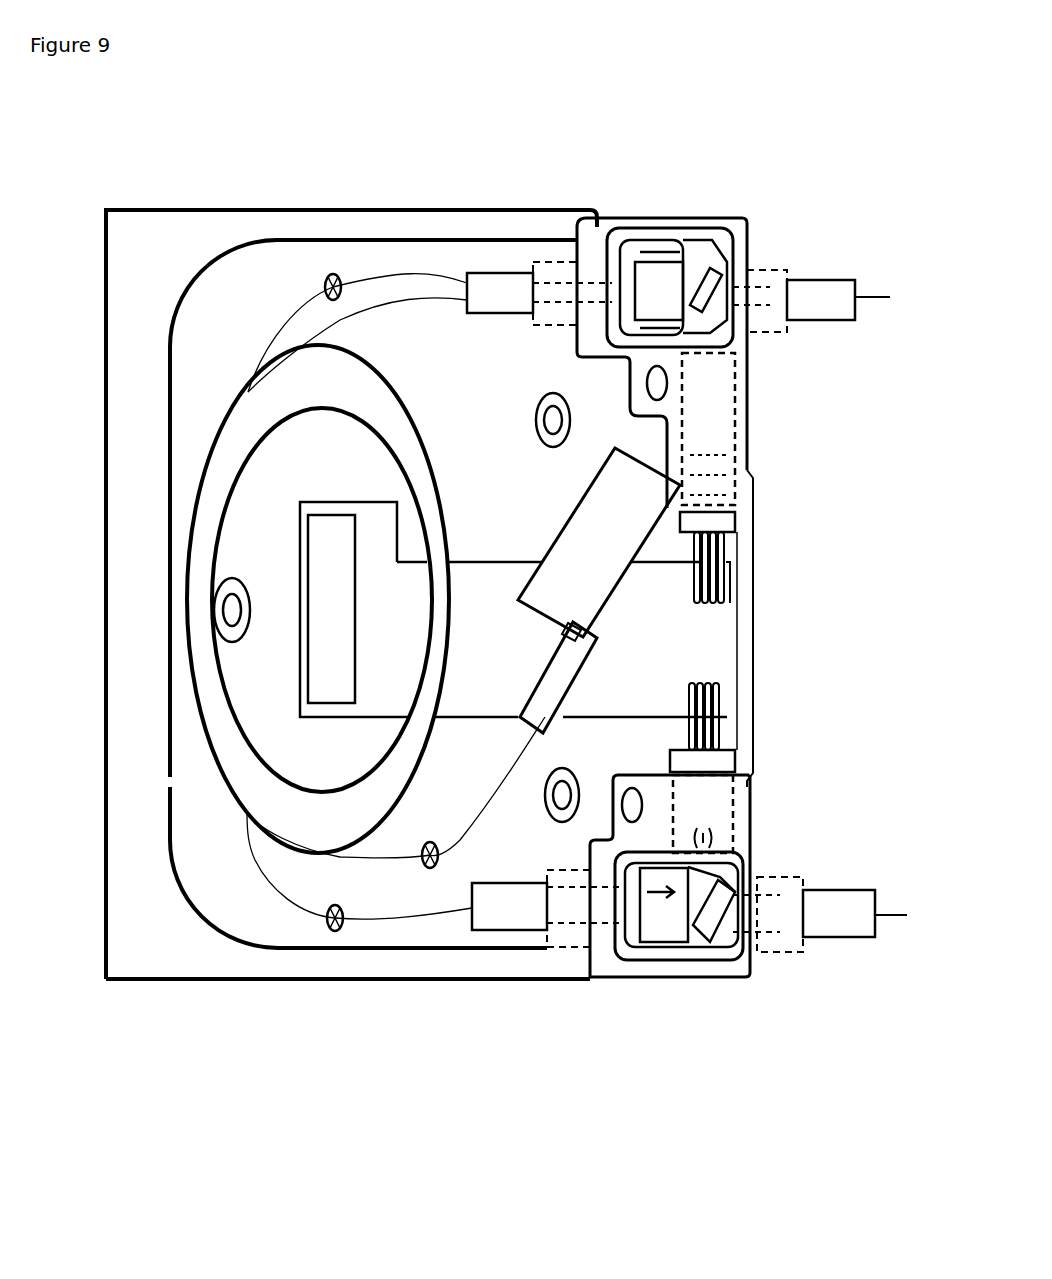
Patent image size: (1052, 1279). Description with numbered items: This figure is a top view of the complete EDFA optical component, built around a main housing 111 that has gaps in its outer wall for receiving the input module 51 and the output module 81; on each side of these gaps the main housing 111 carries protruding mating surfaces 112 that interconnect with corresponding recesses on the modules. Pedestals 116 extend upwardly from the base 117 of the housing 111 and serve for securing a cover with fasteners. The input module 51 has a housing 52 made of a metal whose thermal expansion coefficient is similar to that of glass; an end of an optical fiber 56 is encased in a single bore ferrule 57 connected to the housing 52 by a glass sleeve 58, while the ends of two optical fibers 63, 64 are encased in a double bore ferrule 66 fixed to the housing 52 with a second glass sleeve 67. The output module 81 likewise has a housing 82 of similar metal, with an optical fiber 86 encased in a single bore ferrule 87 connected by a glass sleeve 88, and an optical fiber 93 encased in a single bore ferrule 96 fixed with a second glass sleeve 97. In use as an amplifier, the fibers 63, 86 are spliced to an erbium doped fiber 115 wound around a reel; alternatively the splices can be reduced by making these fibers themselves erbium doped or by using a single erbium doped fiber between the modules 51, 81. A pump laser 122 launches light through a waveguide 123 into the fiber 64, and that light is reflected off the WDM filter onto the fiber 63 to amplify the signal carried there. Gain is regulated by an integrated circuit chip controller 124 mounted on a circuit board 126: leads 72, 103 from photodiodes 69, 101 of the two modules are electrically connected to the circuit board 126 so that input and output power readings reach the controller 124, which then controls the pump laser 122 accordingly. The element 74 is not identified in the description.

The input module 51 is at (710, 152).
The housing 52 is at (737, 217).
The optical fiber 56 is at (878, 297).
The single bore ferrule 57 is at (822, 285).
The glass sleeve 58 is at (768, 268).
The optical fiber 63 is at (395, 272).
The optical fiber 64 is at (412, 302).
The double bore ferrule 66 is at (500, 285).
The second glass sleeve 67 is at (550, 250).
The photodiode 69 is at (728, 515).
The leads 72 is at (723, 597).
The valve element 74 is at (622, 262).
The output module 81 is at (732, 1005).
The housing 82 is at (668, 978).
The optical fiber 86 is at (405, 918).
The single bore ferrule 87 is at (502, 918).
The glass sleeve 88 is at (565, 932).
The optical fiber 93 is at (907, 915).
The single bore ferrule 96 is at (825, 930).
The second glass sleeve 97 is at (782, 948).
The photodiode 101 is at (720, 762).
The leads 103 is at (723, 713).
The main housing 111 is at (133, 225).
The protruding mating surfaces 112 is at (808, 822).
The erbium doped fiber 115 is at (300, 298).
The pedestals 116 is at (533, 423).
The base 117 is at (277, 672).
The pump laser 122 is at (608, 547).
The waveguide 123 is at (493, 793).
The integrated circuit chip controller 124 is at (348, 594).
The circuit board 126 is at (505, 639).